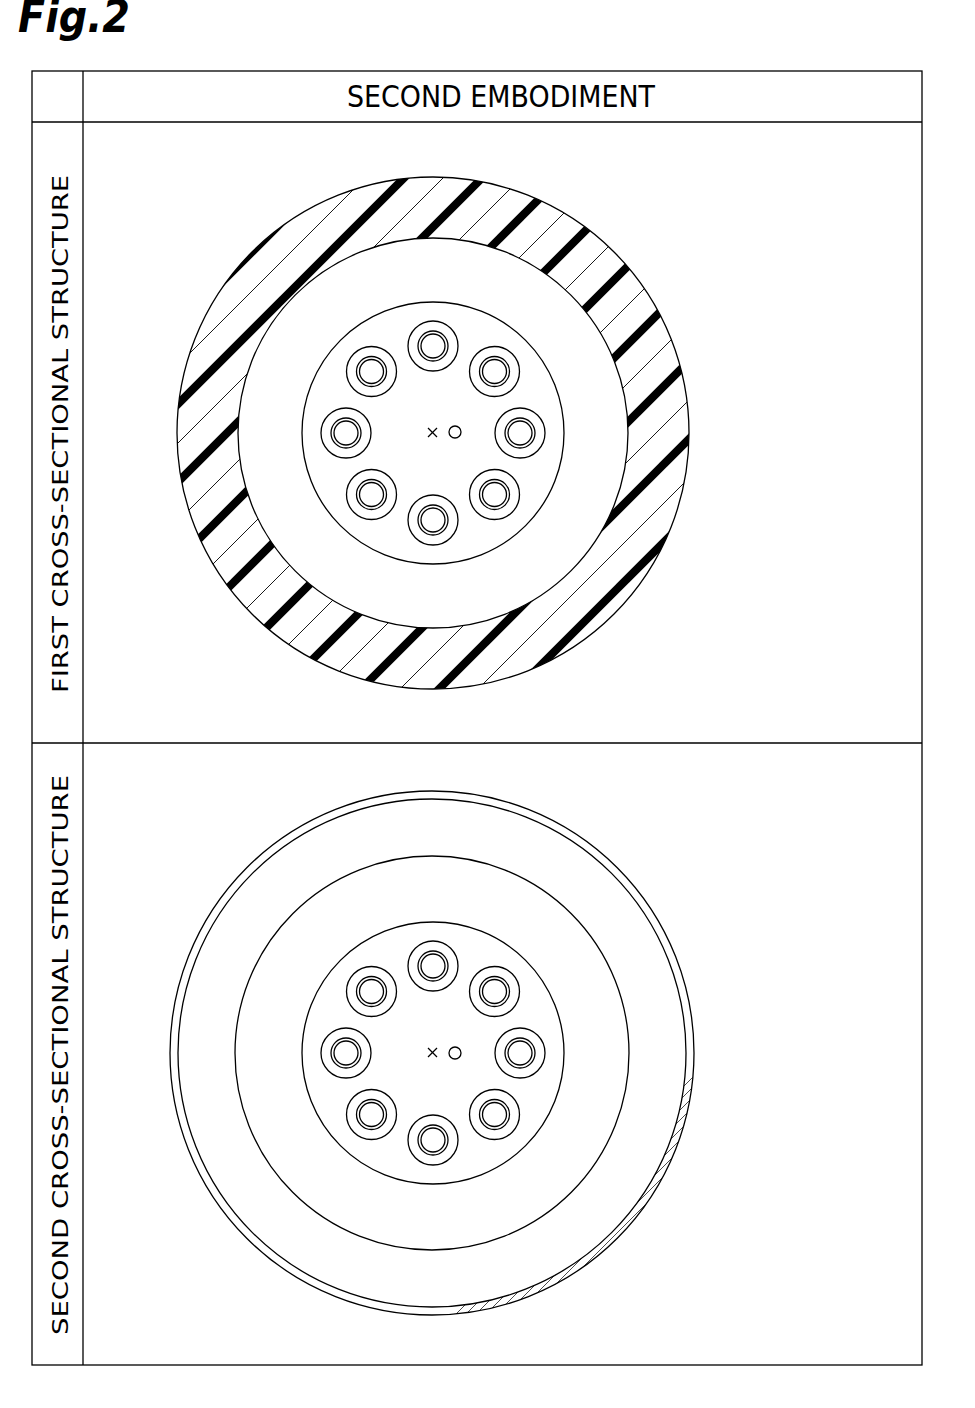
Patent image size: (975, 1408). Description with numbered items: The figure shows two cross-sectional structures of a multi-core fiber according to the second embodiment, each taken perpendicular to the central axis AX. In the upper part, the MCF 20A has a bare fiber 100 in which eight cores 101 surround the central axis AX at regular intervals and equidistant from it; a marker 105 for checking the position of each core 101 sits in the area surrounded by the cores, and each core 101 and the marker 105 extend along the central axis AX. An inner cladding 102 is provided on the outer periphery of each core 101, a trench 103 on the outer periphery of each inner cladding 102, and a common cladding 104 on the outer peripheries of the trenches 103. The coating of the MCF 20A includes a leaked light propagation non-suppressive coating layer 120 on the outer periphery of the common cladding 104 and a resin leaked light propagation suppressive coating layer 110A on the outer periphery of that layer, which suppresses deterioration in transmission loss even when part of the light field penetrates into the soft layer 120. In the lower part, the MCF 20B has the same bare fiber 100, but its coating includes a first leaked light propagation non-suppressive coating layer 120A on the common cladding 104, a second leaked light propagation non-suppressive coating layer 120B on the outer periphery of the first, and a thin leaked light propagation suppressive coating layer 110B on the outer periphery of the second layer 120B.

The MCF 20A is at (487, 425).
The MCF 20B is at (572, 989).
The bare fiber 100 is at (562, 405).
The core 101 is at (440, 345).
The inner cladding 102 is at (450, 346).
The trench 103 is at (461, 350).
The common cladding 104 is at (513, 343).
The marker 105 is at (455, 440).
The leaked light propagation suppressive coating layer 110A is at (655, 497).
The leaked light propagation suppressive coating layer 110B is at (672, 1163).
The leaked light propagation non-suppressive coating layer 120 is at (597, 432).
The first leaked light propagation non-suppressive coating layer 120A is at (597, 1053).
The second leaked light propagation non-suppressive coating layer 120B is at (662, 1080).
The central axis AX is at (432, 430).